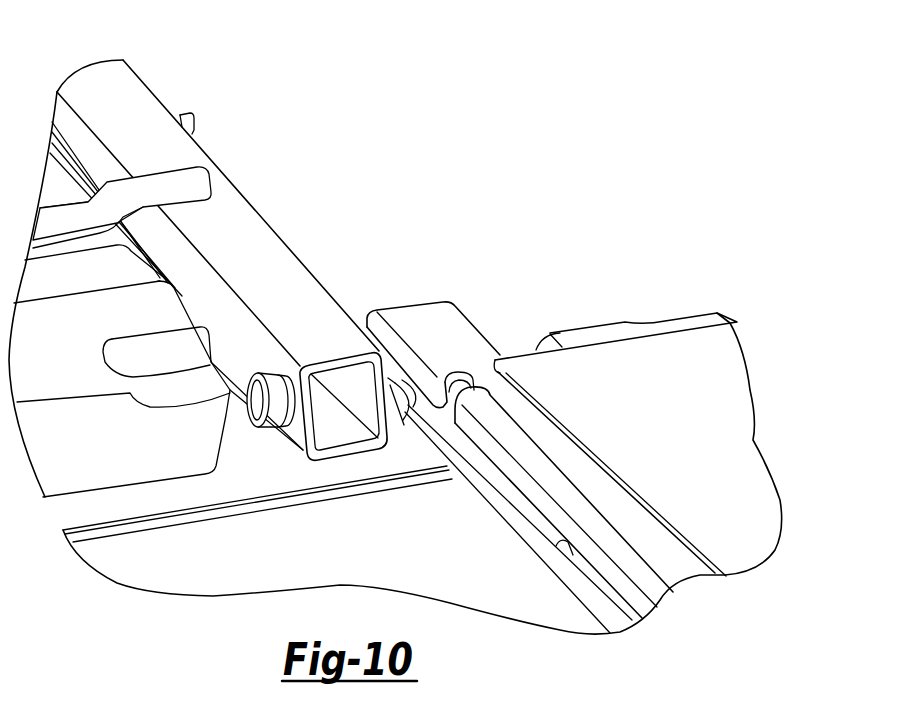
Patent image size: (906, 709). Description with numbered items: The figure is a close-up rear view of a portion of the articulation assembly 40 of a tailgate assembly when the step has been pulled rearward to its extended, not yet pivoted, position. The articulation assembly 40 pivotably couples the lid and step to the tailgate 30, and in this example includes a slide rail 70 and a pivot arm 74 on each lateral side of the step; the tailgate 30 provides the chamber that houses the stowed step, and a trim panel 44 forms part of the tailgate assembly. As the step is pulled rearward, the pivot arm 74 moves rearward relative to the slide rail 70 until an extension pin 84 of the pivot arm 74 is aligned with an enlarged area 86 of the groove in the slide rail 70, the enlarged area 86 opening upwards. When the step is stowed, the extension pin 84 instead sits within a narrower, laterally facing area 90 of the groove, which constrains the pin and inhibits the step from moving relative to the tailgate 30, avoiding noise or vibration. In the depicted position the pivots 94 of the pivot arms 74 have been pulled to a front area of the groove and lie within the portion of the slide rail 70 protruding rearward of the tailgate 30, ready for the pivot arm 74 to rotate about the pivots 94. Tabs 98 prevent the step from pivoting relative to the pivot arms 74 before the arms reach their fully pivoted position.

The tailgate 30 is at (160, 567).
The articulation assembly 40 is at (317, 337).
The trim panel 44 is at (730, 367).
The slide rail 70 is at (577, 473).
The pivot arm 74 is at (134, 104).
The extension pin 84 is at (196, 121).
The enlarged area 86 is at (478, 376).
The laterally facing area 90 is at (556, 545).
The pivot 94 is at (392, 385).
The tab 98 is at (157, 183).